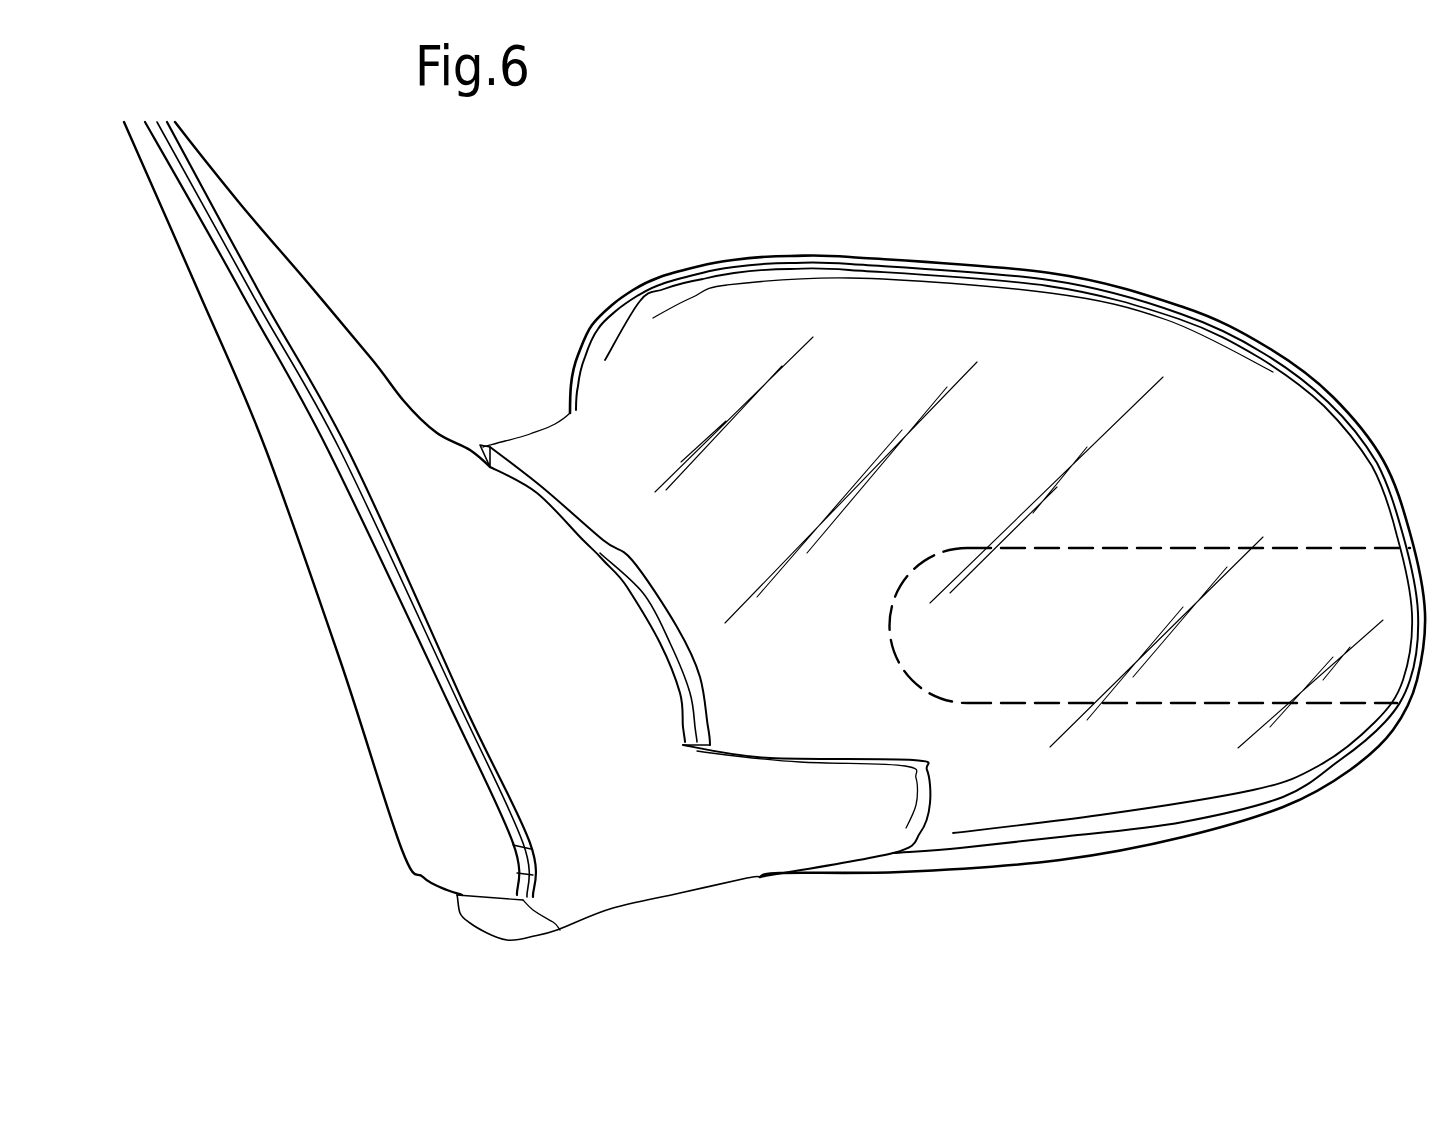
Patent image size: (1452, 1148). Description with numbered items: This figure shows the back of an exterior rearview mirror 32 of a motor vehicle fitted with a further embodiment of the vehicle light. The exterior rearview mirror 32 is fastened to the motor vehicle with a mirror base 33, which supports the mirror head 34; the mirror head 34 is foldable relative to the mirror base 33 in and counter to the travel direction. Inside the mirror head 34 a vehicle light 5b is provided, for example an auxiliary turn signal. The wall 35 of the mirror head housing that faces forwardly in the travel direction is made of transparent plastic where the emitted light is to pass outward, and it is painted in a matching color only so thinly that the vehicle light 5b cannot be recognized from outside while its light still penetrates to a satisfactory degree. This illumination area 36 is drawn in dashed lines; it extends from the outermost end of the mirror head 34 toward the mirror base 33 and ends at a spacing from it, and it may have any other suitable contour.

The exterior rearview mirror 32 is at (1037, 228).
The mirror base 33 is at (322, 338).
The mirror head 34 is at (735, 353).
The wall 35 is at (1113, 398).
The illumination area 36 is at (1127, 538).
The vehicle light 5b is at (1342, 562).